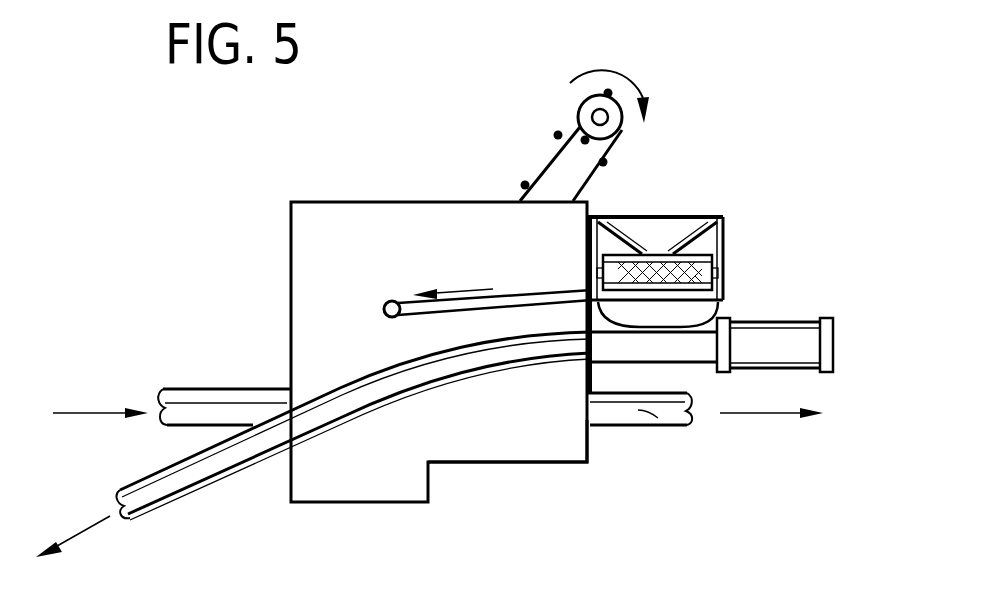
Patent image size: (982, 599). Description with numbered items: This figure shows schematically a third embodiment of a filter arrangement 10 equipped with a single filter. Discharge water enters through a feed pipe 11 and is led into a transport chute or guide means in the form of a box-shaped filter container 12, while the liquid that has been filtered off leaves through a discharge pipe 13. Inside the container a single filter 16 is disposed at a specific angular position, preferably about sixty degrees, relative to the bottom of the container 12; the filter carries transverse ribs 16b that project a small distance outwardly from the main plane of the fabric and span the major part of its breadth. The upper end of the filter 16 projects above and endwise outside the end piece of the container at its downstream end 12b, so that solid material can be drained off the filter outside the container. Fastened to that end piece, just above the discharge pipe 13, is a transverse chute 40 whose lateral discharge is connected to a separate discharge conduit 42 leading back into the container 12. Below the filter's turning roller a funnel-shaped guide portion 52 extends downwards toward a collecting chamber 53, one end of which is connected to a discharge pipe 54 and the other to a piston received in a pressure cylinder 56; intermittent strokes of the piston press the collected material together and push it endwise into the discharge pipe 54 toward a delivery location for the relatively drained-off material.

The filter arrangement 10 is at (316, 276).
The feed pipe 11 is at (218, 400).
The filter container 12 is at (364, 223).
The downstream end 12b is at (588, 447).
The discharge pipe 13 is at (667, 428).
The filter 16 is at (657, 155).
The belt studs 16b is at (556, 135).
The transverse chute 40 is at (745, 250).
The discharge conduit 42 is at (510, 293).
The funnel-shaped guide portion 52 is at (682, 313).
The collecting chamber 53 is at (697, 350).
The discharge pipe 54 is at (458, 362).
The pressure cylinder 56 is at (807, 350).